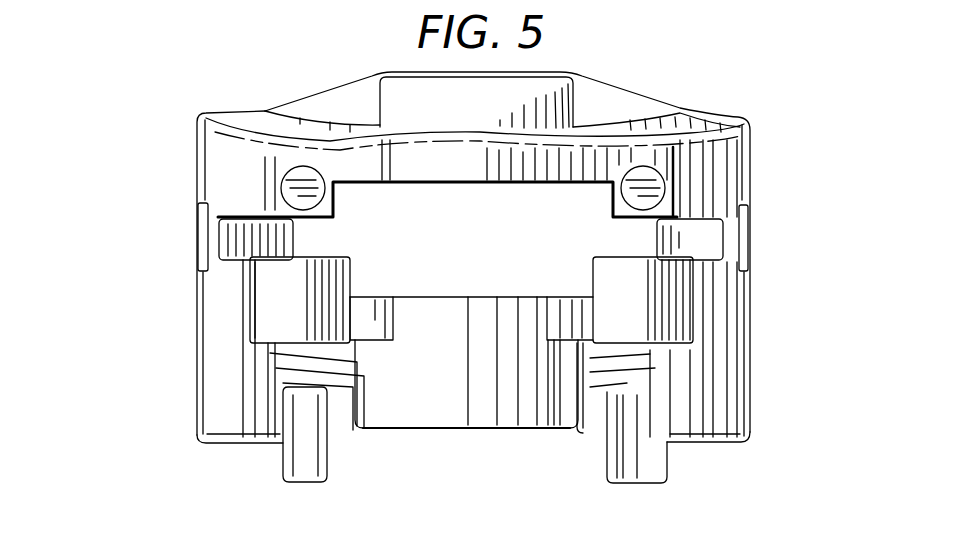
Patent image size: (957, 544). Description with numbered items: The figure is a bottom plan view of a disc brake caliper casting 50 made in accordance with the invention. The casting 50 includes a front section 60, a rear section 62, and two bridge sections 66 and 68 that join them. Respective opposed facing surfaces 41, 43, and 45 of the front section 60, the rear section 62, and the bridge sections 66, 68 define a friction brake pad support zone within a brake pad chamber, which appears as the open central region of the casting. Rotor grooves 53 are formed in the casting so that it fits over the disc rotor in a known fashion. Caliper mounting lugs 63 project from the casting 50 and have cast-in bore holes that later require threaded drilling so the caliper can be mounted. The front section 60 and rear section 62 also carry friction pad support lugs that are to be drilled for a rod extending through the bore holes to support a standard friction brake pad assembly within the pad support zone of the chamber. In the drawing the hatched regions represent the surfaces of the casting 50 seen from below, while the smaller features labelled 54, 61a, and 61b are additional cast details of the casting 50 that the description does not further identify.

The disc brake caliper casting 50 is at (185, 172).
The rear section 62 is at (425, 105).
The opposed facing surface 43 is at (552, 183).
The rotor groove 53 is at (637, 216).
The opposed facing surface 45 is at (294, 240).
The platform 54 is at (463, 297).
The opposed facing surface 41 is at (517, 297).
The caliper mounting lug 63 is at (297, 312).
The bridge section 68 is at (215, 351).
The bridge section 66 is at (720, 358).
The front section 60 is at (392, 442).
The left tab 61b is at (312, 473).
The right tab 61a is at (645, 472).